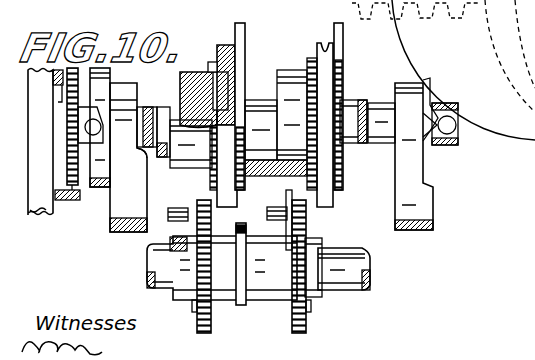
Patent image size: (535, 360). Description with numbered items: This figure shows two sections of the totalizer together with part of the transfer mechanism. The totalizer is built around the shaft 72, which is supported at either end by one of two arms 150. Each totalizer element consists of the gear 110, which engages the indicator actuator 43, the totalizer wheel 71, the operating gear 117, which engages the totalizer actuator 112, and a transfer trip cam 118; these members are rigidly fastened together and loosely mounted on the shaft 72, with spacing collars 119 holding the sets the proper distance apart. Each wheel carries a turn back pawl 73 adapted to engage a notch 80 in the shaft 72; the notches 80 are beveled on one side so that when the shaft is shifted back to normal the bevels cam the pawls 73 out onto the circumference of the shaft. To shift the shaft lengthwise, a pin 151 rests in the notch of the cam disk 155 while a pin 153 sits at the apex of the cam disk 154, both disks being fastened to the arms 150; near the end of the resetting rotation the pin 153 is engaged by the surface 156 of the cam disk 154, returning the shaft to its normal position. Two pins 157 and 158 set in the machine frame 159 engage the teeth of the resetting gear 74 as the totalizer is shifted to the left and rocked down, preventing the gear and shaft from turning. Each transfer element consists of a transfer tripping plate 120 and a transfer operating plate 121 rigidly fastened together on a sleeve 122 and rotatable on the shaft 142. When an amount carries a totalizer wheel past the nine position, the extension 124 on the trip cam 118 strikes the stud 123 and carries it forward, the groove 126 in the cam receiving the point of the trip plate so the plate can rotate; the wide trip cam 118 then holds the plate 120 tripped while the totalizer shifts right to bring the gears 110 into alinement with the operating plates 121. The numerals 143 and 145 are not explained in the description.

The indicator actuator 43 is at (243, 37).
The totalizer wheel 71 is at (225, 45).
The shaft 72 is at (141, 166).
The turn back pawl 73 is at (213, 73).
The resetting gear 74 is at (80, 185).
The notch 80 is at (292, 106).
The gear 110 is at (246, 78).
The totalizer actuator 112 is at (204, 334).
The operating gear 117 is at (212, 63).
The transfer trip cam 118 is at (180, 87).
The spacing collar 119 is at (258, 100).
The transfer tripping plate 120 is at (198, 307).
The transfer operating plate 121 is at (242, 307).
The sleeve 122 is at (306, 243).
The stud 123 is at (167, 214).
The extension 124 is at (180, 190).
The groove 126 is at (190, 168).
The shaft 142 is at (356, 291).
The shaft body 143 is at (237, 233).
The plate 145 is at (303, 221).
The arm 150 is at (113, 234).
The pin 151 is at (110, 138).
The pin 153 is at (455, 131).
The cam disk 154 is at (423, 80).
The cam disk 155 is at (147, 109).
The surface 156 is at (436, 143).
The pin 157 is at (45, 142).
The pin 158 is at (63, 201).
The machine frame 159 is at (33, 206).